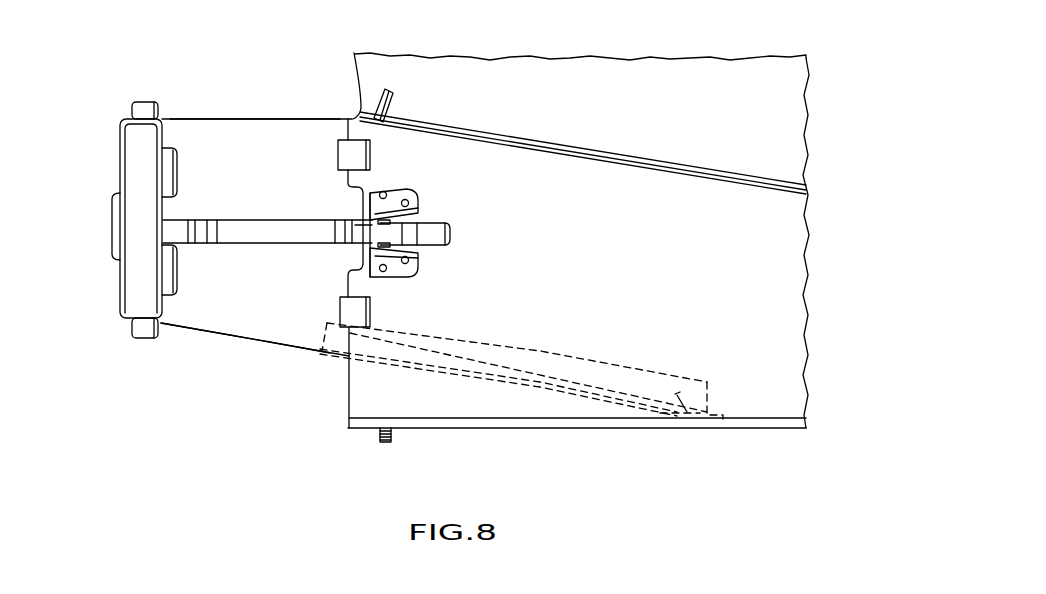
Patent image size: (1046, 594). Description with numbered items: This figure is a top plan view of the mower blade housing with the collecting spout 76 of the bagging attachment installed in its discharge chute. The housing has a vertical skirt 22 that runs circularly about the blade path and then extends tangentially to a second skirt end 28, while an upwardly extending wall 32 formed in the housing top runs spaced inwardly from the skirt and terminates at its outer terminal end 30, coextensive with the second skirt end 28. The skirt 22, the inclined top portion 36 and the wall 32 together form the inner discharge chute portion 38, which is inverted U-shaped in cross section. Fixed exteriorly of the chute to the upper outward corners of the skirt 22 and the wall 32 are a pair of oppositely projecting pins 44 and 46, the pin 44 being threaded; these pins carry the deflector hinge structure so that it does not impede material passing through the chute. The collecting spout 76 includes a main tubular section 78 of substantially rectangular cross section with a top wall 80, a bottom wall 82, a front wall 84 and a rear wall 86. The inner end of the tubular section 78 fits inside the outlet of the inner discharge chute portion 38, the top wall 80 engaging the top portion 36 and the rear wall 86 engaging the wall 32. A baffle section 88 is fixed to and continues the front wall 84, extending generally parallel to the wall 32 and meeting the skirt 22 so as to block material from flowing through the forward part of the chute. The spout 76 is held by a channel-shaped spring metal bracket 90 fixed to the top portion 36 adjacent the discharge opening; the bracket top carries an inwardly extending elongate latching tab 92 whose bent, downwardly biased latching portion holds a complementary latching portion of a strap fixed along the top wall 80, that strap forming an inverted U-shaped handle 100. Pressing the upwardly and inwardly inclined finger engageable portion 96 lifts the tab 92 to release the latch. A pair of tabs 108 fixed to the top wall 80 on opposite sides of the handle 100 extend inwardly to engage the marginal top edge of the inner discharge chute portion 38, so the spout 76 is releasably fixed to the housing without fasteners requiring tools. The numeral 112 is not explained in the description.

The vertical skirt 22 is at (540, 429).
The second skirt end 28 is at (349, 426).
The outer terminal end of wall 30 is at (352, 118).
The upwardly extending wall 32 is at (597, 148).
The top portion 36 is at (642, 291).
The inner discharge chute portion 38 is at (672, 207).
The pin 44 is at (392, 442).
The pin 46 is at (393, 100).
The collecting spout 76 is at (282, 354).
The main tubular section 78 is at (256, 316).
The top wall 80 is at (280, 187).
The bottom wall 82 is at (130, 172).
The front wall 84 is at (195, 334).
The rear wall 86 is at (231, 119).
The baffle section 88 is at (643, 370).
The channel-shaped spring metal bracket 90 is at (414, 188).
The latching tab 92 is at (380, 233).
The finger engageable portion 96 is at (438, 228).
The handle 100 is at (259, 237).
The tabs 108 is at (371, 157).
The cushion pads 112 is at (178, 175).